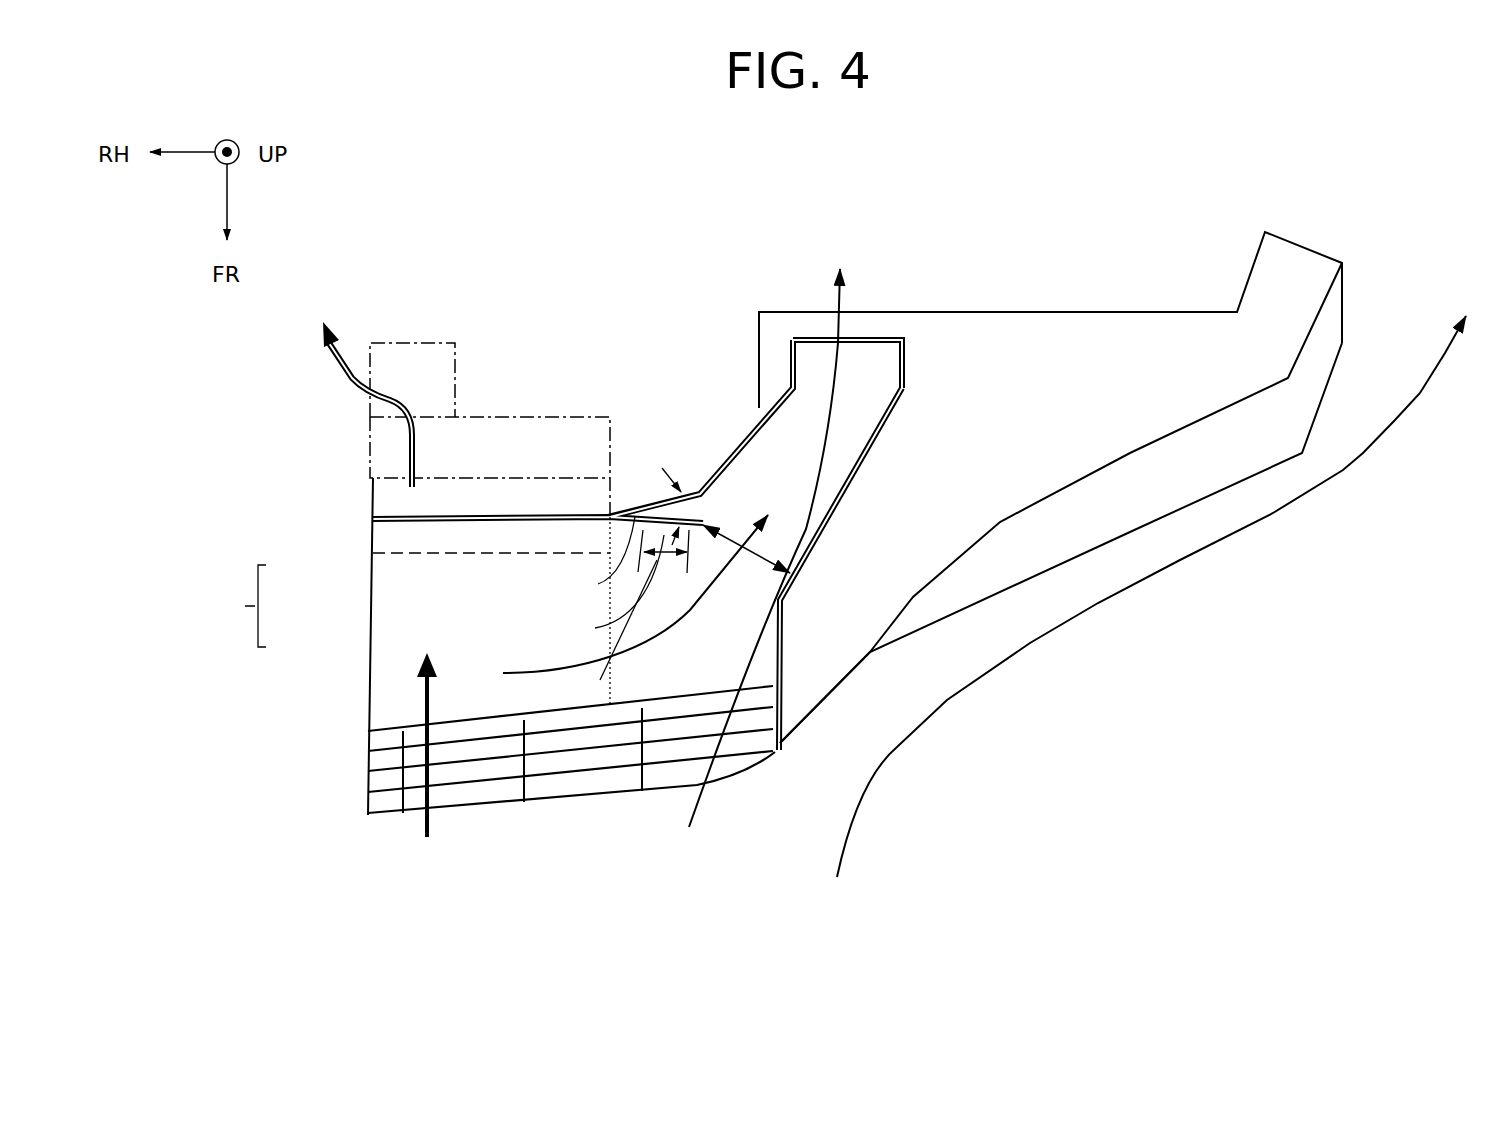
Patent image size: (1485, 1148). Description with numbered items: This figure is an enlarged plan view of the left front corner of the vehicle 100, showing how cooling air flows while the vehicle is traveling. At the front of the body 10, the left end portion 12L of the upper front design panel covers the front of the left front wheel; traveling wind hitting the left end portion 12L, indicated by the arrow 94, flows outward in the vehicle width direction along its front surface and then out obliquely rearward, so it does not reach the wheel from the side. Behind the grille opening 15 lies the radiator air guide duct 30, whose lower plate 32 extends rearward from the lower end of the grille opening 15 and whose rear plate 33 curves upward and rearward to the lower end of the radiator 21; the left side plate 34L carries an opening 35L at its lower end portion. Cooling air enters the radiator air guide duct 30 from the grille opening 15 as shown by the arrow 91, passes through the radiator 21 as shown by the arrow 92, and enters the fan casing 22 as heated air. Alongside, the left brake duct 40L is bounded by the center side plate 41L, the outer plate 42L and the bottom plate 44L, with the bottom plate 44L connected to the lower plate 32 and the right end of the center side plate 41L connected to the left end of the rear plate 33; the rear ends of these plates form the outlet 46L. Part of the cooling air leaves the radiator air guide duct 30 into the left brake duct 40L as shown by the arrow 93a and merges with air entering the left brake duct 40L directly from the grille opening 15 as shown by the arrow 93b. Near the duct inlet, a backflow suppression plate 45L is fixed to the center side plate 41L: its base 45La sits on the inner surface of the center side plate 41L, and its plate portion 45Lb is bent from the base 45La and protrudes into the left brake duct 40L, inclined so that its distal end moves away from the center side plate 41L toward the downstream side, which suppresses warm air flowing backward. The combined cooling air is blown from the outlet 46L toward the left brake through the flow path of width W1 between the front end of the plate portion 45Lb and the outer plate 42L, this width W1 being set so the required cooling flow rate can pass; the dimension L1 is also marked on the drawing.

The vehicle 100 is at (198, 482).
The body 10 is at (1072, 310).
The left end portion 12L is at (1156, 523).
The grille opening 15 is at (665, 793).
The radiator 21 is at (370, 427).
The fan casing 22 is at (455, 400).
The radiator air guide duct 30 is at (360, 668).
The lower plate 32 is at (395, 690).
The rear plate 33 is at (395, 515).
The left side plate 34L is at (578, 655).
The opening 35L is at (570, 821).
The left brake duct 40L is at (826, 531).
The center side plate 41L is at (745, 440).
The outer plate 42L is at (860, 472).
The bottom plate 44L is at (748, 660).
The backflow suppression plate 45L is at (229, 606).
The base 45La is at (598, 584).
The plate portion 45Lb is at (595, 628).
The outlet 46L is at (818, 334).
The arrow 91 is at (423, 818).
The arrow 92 is at (336, 368).
The arrow 93a is at (660, 660).
The arrow 93b is at (815, 440).
The arrow 94 is at (1273, 513).
The length L1 is at (600, 680).
The width W1 is at (728, 530).